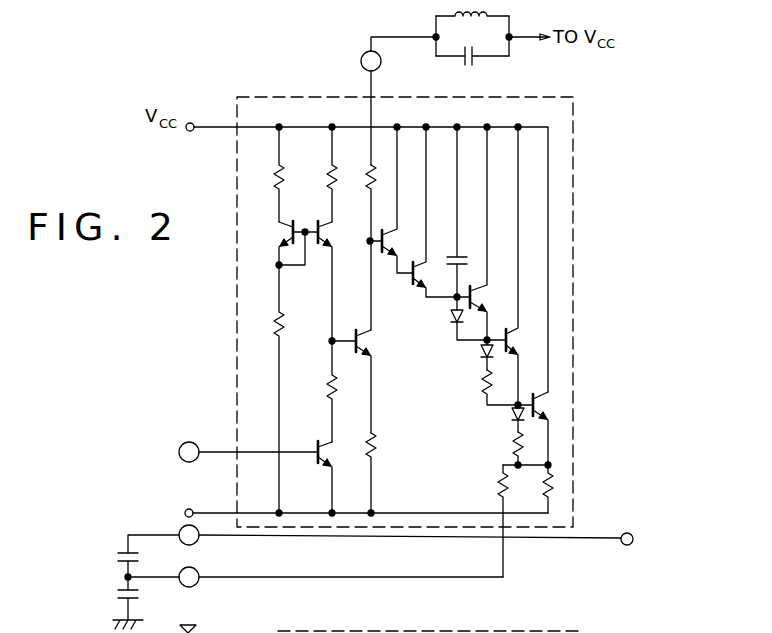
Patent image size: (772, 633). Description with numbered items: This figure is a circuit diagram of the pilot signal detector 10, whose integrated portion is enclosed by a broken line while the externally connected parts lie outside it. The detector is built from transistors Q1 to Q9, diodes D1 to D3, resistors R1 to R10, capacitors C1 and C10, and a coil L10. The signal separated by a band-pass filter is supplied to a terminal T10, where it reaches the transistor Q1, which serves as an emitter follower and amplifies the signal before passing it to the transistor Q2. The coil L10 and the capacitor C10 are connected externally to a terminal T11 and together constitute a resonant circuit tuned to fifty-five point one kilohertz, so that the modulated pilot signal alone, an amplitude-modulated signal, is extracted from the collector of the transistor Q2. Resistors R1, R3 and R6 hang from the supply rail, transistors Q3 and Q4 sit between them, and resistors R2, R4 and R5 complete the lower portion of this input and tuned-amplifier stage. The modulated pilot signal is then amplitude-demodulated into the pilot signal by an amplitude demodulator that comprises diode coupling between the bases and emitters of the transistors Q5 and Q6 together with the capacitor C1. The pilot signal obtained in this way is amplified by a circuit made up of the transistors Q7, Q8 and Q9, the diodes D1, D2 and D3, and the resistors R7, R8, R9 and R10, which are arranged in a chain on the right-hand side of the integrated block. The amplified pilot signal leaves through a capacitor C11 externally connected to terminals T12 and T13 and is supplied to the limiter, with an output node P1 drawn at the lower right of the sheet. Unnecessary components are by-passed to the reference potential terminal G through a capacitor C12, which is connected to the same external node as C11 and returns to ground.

The pilot signal detector 10 is at (555, 97).
The terminal T11 is at (361, 61).
The coil L10 is at (454, 16).
The capacitor C10 is at (474, 60).
The resistor R1 is at (284, 176).
The resistor R3 is at (349, 160).
The resistor R6 is at (368, 182).
The transistor Q3 is at (290, 233).
The transistor Q4 is at (328, 242).
The resistor R2 is at (283, 324).
The transistor Q2 is at (365, 343).
The resistor R4 is at (328, 390).
The transistor Q1 is at (313, 451).
The resistor R5 is at (375, 443).
The transistor Q5 is at (393, 264).
The transistor Q6 is at (441, 213).
The capacitor C1 is at (457, 252).
The transistor Q7 is at (478, 299).
The diode D1 is at (452, 320).
The transistor Q8 is at (505, 267).
The diode D2 is at (481, 356).
The resistor R7 is at (482, 384).
The transistor Q9 is at (540, 402).
The diode D3 is at (511, 421).
The resistor R8 is at (512, 447).
The resistor R10 is at (497, 486).
The resistor R9 is at (545, 486).
The terminal T10 is at (197, 444).
The reference potential terminal G is at (365, 501).
The terminal T12 is at (195, 542).
The terminal P1 is at (625, 533).
The terminal T13 is at (195, 584).
The capacitor C11 is at (117, 555).
The capacitor C12 is at (117, 593).